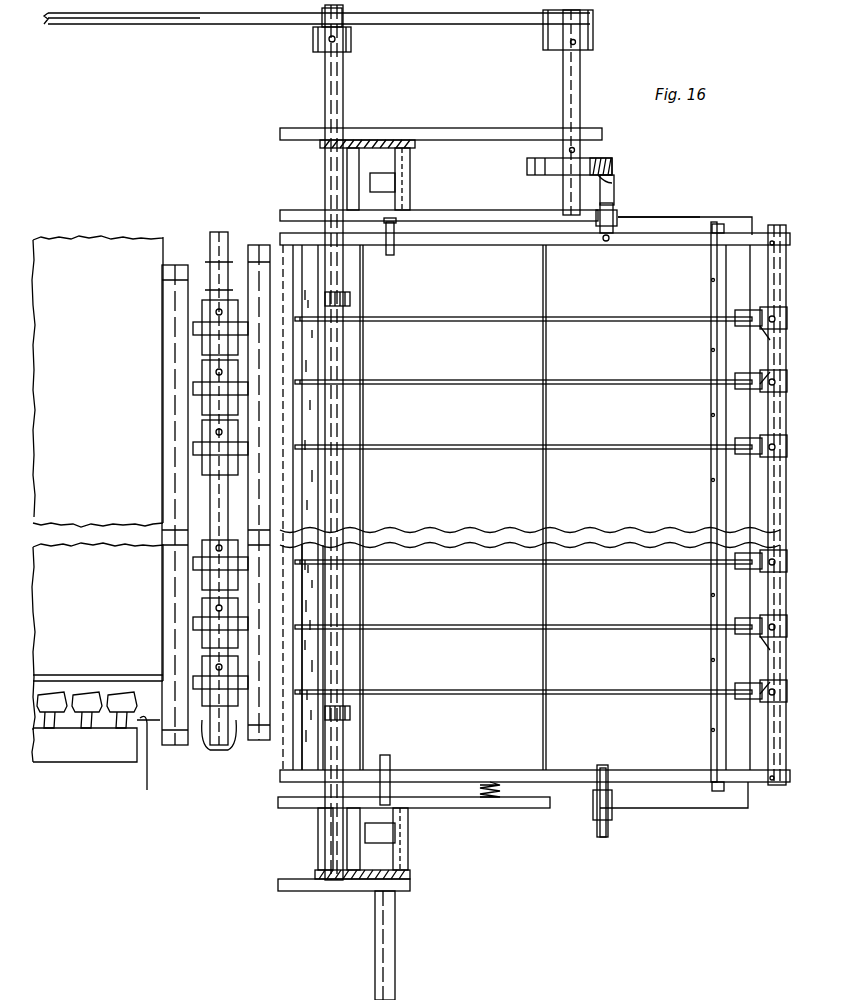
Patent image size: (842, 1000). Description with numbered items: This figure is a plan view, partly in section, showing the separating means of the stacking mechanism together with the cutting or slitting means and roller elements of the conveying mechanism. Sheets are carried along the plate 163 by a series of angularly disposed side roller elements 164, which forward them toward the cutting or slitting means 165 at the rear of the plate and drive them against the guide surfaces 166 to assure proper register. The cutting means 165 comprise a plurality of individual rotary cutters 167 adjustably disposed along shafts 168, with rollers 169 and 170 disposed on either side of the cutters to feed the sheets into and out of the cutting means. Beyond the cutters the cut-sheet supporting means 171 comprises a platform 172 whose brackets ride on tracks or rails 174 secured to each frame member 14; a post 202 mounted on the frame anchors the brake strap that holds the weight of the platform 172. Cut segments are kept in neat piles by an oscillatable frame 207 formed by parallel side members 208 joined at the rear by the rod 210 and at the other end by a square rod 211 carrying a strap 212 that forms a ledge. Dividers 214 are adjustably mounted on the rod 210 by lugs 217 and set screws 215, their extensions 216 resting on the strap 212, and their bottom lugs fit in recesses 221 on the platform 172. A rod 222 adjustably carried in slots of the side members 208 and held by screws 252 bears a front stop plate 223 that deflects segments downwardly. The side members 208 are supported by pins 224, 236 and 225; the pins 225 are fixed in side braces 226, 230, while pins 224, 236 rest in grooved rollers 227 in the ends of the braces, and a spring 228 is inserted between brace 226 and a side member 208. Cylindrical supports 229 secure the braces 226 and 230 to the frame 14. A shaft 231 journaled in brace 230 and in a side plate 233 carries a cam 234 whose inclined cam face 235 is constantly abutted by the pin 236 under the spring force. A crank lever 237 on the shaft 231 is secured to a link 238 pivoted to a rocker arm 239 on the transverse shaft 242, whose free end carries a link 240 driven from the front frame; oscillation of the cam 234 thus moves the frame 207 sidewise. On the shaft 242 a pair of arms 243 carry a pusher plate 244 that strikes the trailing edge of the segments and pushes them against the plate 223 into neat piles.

The frame member 14 is at (327, 150).
The plate 163 is at (76, 242).
The side roller elements 164 is at (122, 695).
The cutting or slitting means 165 is at (221, 199).
The guide surfaces 166 is at (99, 763).
The rotary cutters 167 is at (195, 336).
The shafts 168 is at (218, 748).
The roller 169 is at (172, 627).
The roller 170 is at (258, 742).
The cut-sheet supporting means 171 is at (703, 208).
The platform 172 is at (530, 507).
The tracks or rails 174 is at (387, 184).
The post 202 is at (395, 937).
The oscillatable frame 207 is at (702, 236).
The side members 208 is at (497, 245).
The rod 210 is at (790, 270).
The square rod 211 is at (290, 592).
The strap 212 is at (293, 608).
The dividers 214 is at (500, 378).
The set screws 215 is at (760, 312).
The extensions 216 is at (304, 384).
The lugs 217 is at (760, 380).
The recesses 221 is at (355, 481).
The rod 222 is at (712, 428).
The front stop plate 223 is at (725, 442).
The pin 224 is at (598, 818).
The pins 225 is at (394, 252).
The side brace 226 is at (452, 808).
The grooved rollers 227 is at (613, 227).
The spring 228 is at (480, 790).
The cylindrical supports 229 is at (350, 175).
The side brace 230 is at (472, 210).
The shaft 231 is at (563, 87).
The side plate 233 is at (487, 128).
The cam 234 is at (540, 176).
The cam face 235 is at (608, 183).
The pin 236 is at (614, 193).
The crank lever 237 is at (545, 45).
The link 238 is at (442, 25).
The rocker arm 239 is at (352, 40).
The link 240 is at (198, 25).
The transverse shaft 242 is at (326, 89).
The arms 243 is at (350, 299).
The pusher plate 244 is at (310, 430).
The screws 252 is at (718, 262).